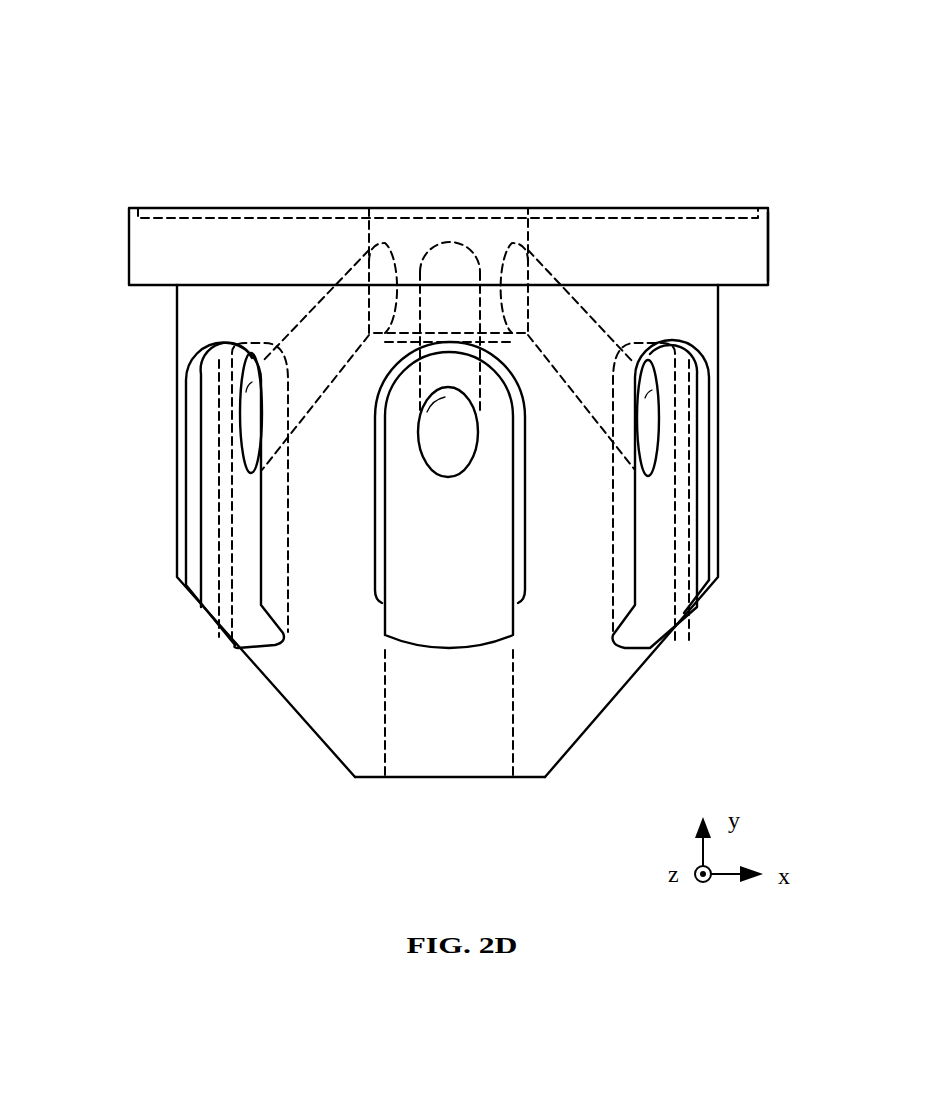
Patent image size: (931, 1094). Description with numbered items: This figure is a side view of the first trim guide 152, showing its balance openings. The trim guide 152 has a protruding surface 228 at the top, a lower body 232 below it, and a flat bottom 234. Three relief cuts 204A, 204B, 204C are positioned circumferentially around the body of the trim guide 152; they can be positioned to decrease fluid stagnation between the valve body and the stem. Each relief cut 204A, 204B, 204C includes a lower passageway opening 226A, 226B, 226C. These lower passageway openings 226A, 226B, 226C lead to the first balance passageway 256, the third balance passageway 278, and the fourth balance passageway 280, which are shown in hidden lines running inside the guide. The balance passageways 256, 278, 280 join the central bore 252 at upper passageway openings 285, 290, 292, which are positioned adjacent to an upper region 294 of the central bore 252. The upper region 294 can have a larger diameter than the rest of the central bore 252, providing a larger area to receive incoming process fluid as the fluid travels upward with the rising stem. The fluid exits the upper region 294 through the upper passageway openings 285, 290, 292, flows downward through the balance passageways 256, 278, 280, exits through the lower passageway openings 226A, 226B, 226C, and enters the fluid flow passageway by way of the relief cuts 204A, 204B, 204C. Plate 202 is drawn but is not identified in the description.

The first trim guide 152 is at (90, 64).
The mounting plate 202 is at (626, 208).
The protruding surface 228 is at (748, 263).
The first balance passageway 256 is at (330, 323).
The fourth balance passageway 280 is at (560, 333).
The upper region 294 is at (404, 233).
The upper passageway opening 285 is at (360, 250).
The upper passageway opening 290 is at (442, 253).
The upper passageway opening 292 is at (520, 238).
The third balance passageway 278 is at (452, 307).
The relief cut 204A is at (236, 533).
The relief cut 204B is at (487, 526).
The relief cut 204C is at (672, 505).
The lower passageway opening 226A is at (252, 430).
The lower passageway opening 226B is at (445, 463).
The lower passageway opening 226C is at (652, 428).
The central bore 252 is at (425, 687).
The lower body 232 is at (615, 708).
The flat bottom 234 is at (437, 777).